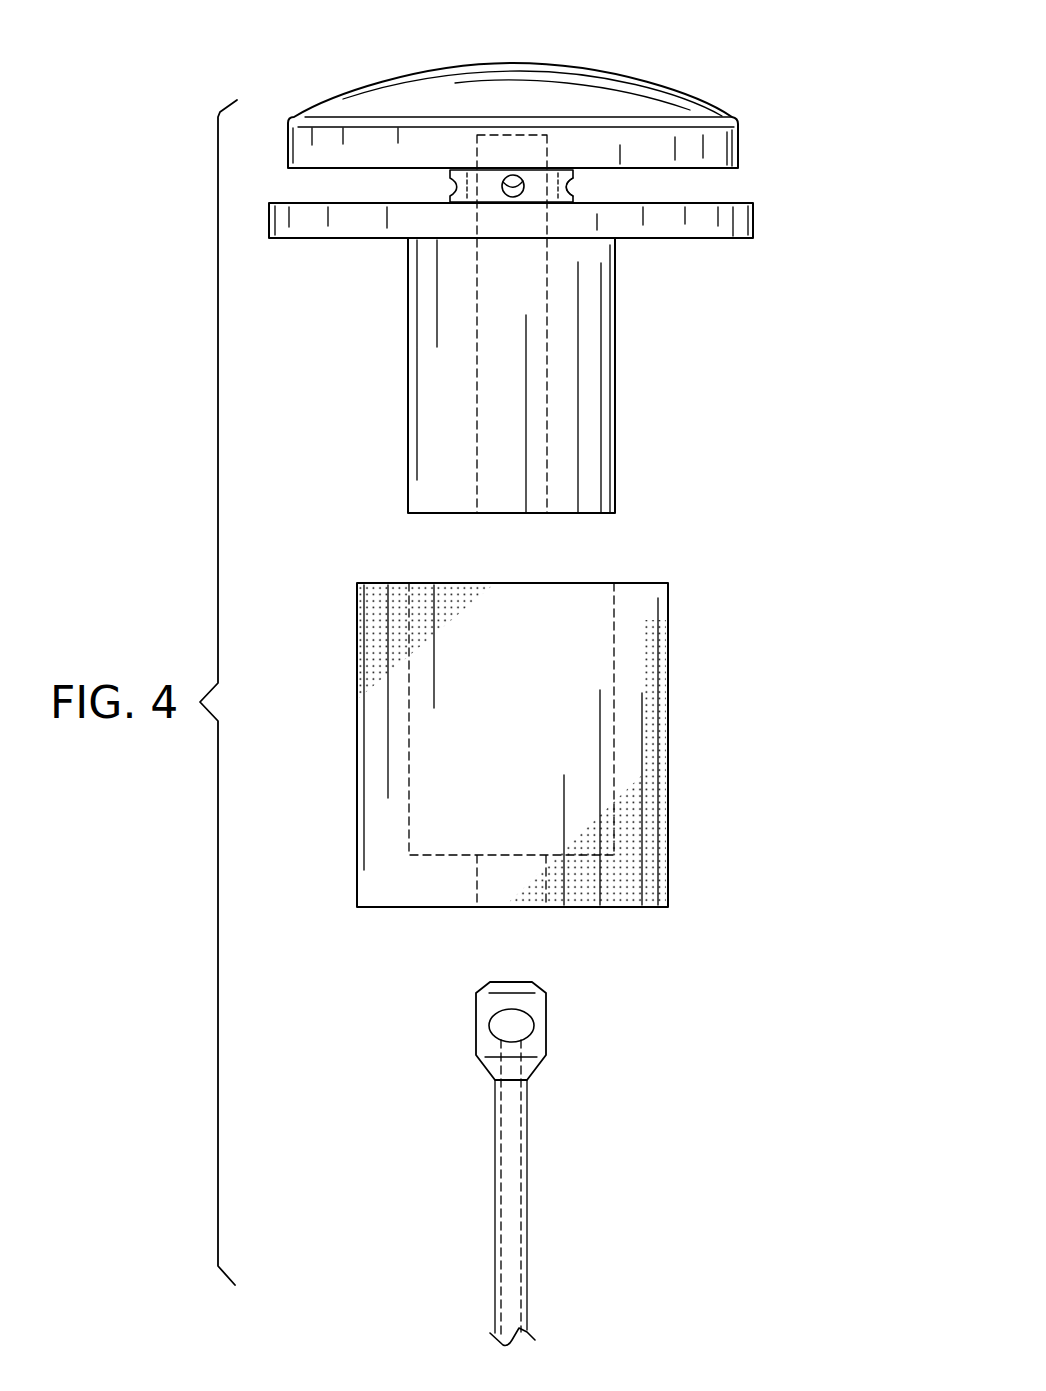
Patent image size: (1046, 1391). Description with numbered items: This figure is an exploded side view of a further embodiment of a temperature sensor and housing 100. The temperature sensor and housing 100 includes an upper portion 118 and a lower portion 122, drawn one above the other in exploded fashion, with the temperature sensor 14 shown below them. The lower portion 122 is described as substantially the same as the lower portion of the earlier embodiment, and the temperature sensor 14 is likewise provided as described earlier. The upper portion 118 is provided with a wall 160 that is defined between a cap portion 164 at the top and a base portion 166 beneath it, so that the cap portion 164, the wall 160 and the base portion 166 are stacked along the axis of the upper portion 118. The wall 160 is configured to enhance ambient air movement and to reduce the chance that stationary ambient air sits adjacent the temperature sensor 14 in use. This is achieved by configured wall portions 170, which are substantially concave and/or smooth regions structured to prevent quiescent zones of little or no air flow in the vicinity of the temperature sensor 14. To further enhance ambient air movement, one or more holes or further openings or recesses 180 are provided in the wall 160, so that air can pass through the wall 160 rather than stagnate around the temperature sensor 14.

The cap portion 164 is at (395, 102).
The hole 180 is at (520, 185).
The configured wall portion 170 is at (567, 184).
The wall 160 is at (463, 184).
The upper portion 118 is at (757, 218).
The base portion 166 is at (377, 228).
The temperature sensor and housing 100 is at (650, 332).
The lower portion 122 is at (673, 717).
The temperature sensor 14 is at (557, 1032).